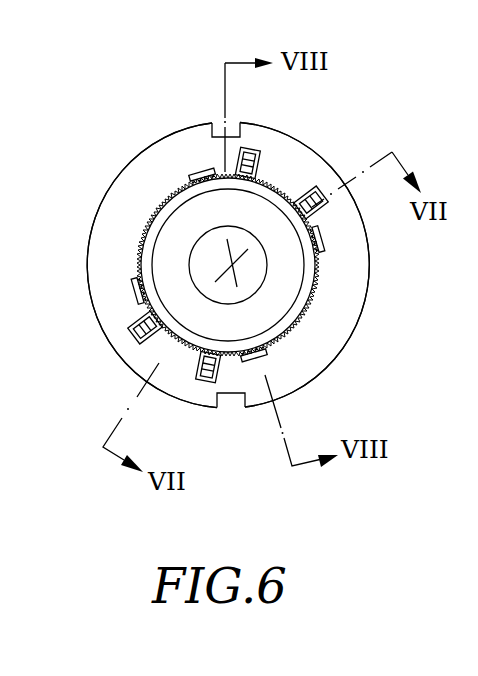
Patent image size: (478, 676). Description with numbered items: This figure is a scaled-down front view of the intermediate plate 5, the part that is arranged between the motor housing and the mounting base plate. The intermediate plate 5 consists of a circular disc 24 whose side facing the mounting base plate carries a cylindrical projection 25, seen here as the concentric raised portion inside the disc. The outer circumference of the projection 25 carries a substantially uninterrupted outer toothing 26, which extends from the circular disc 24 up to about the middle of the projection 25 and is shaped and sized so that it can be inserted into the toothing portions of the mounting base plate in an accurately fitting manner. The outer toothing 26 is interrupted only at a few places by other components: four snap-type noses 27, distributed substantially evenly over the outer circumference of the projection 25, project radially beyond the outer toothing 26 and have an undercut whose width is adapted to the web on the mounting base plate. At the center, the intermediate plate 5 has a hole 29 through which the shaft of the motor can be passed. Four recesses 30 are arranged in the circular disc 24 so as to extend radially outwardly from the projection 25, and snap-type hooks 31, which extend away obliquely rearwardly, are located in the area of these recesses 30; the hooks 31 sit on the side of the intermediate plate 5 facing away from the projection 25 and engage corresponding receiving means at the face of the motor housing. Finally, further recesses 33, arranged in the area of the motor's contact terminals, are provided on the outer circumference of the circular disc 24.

The intermediate plate 5 is at (338, 374).
The circular disc 24 is at (313, 343).
The cylindrical projection 25 is at (312, 298).
The outer toothing 26 is at (318, 190).
The snap-type noses 27 is at (190, 170).
The hole 29 is at (210, 253).
The recesses 30 is at (263, 160).
The snap-type hooks 31 is at (250, 150).
The further recesses 33 is at (223, 122).